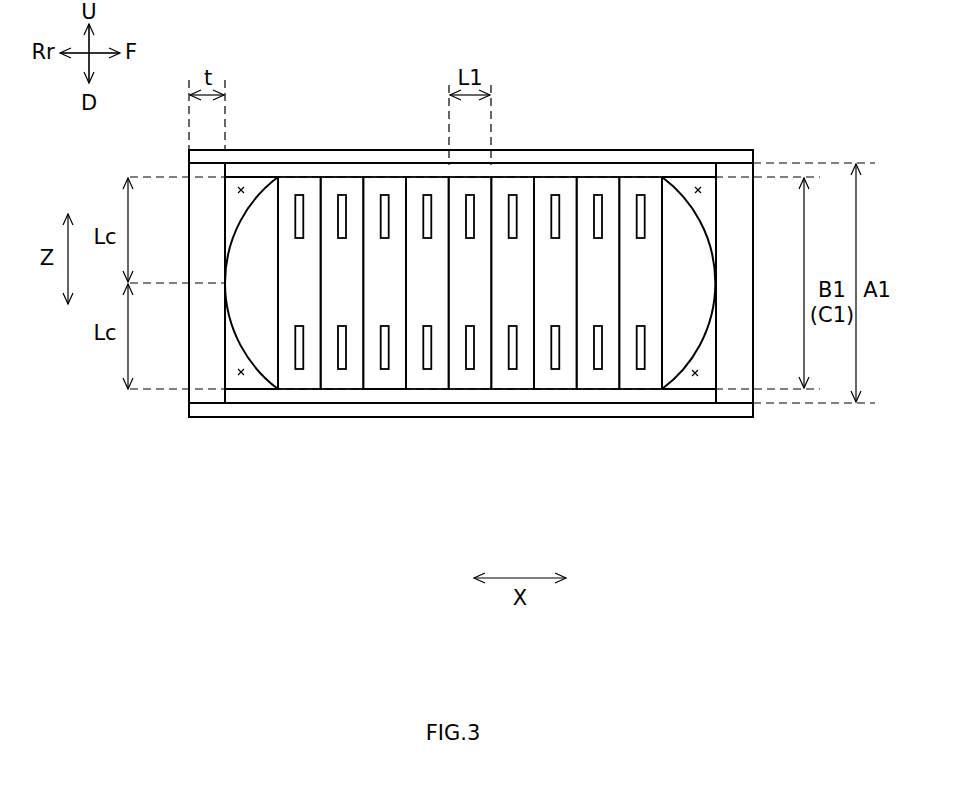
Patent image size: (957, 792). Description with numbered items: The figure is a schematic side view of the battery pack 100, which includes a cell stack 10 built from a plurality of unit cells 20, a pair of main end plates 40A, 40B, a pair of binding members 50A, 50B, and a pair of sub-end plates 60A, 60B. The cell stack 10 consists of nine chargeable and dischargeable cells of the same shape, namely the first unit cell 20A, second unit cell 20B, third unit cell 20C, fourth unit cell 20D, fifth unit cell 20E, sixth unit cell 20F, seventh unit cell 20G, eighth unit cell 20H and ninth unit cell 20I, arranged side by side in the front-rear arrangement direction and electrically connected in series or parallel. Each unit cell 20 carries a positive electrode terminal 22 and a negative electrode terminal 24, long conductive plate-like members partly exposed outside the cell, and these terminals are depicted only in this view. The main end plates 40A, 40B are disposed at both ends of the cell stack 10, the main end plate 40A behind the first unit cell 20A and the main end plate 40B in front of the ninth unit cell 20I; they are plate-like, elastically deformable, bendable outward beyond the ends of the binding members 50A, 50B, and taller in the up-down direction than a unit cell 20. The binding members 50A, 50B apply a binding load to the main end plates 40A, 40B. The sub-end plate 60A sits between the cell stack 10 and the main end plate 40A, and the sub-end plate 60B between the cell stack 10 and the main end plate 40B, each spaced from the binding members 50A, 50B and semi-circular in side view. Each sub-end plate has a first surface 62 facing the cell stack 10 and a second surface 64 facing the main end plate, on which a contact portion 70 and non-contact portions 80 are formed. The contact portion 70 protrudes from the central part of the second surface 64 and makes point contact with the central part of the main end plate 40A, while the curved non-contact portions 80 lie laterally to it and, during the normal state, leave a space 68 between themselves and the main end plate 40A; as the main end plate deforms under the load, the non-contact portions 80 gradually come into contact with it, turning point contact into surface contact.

The battery pack 100 is at (743, 81).
The cell stack 10 is at (296, 395).
The unit cell 20 is at (473, 360).
The first unit cell 20A is at (318, 392).
The second unit cell 20B is at (335, 392).
The third unit cell 20C is at (392, 392).
The fourth unit cell 20D is at (425, 392).
The fifth unit cell 20E is at (477, 392).
The sixth unit cell 20F is at (515, 392).
The seventh unit cell 20G is at (565, 392).
The eighth unit cell 20H is at (608, 392).
The ninth unit cell 20I is at (655, 392).
The positive electrode terminal 22 is at (386, 192).
The negative electrode terminal 24 is at (386, 392).
The main end plate 40A is at (198, 410).
The main end plate 40B is at (734, 383).
The binding member 50A is at (539, 160).
The binding member 50B is at (733, 413).
The sub-end plate 60A is at (222, 205).
The sub-end plate 60B is at (735, 160).
The first surface 62 is at (282, 269).
The second surface 64 is at (232, 339).
The space 68 is at (242, 185).
The contact portion 70 is at (222, 280).
The non-contact portion 80 is at (235, 218).